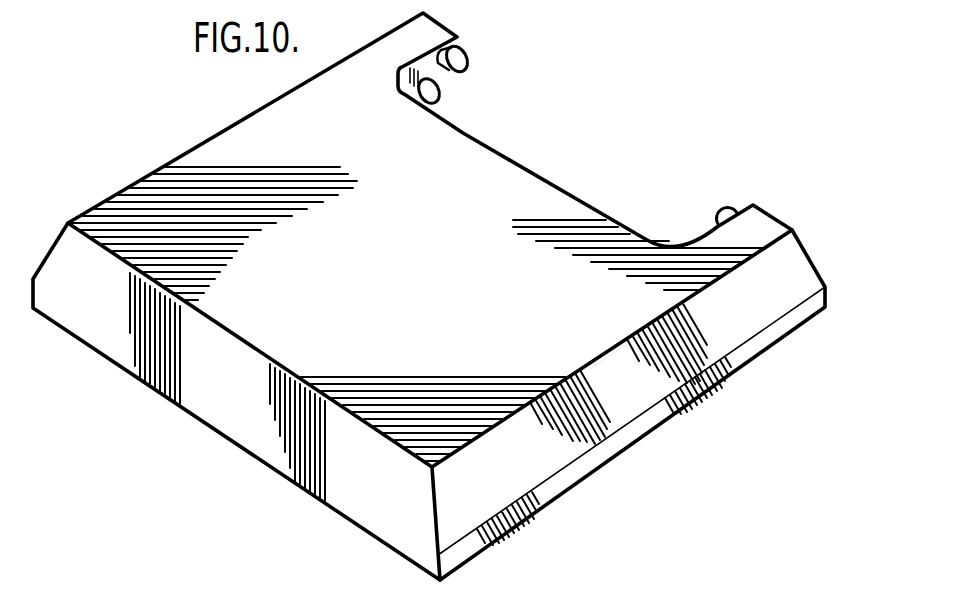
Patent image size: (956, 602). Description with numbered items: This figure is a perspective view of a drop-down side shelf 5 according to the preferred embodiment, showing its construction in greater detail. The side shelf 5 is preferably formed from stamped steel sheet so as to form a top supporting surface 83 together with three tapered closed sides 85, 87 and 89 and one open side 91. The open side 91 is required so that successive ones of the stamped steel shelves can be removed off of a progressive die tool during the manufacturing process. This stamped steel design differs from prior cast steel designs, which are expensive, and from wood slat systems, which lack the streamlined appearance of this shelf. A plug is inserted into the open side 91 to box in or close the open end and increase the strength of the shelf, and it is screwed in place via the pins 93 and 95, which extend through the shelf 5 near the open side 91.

The side shelf 5 is at (607, 413).
The top supporting surface 83 is at (442, 289).
The tapered closed side 85 is at (186, 158).
The tapered closed side 87 is at (210, 414).
The tapered closed side 89 is at (768, 313).
The open side 91 is at (439, 296).
The pin 93 is at (437, 97).
The pin 95 is at (467, 60).